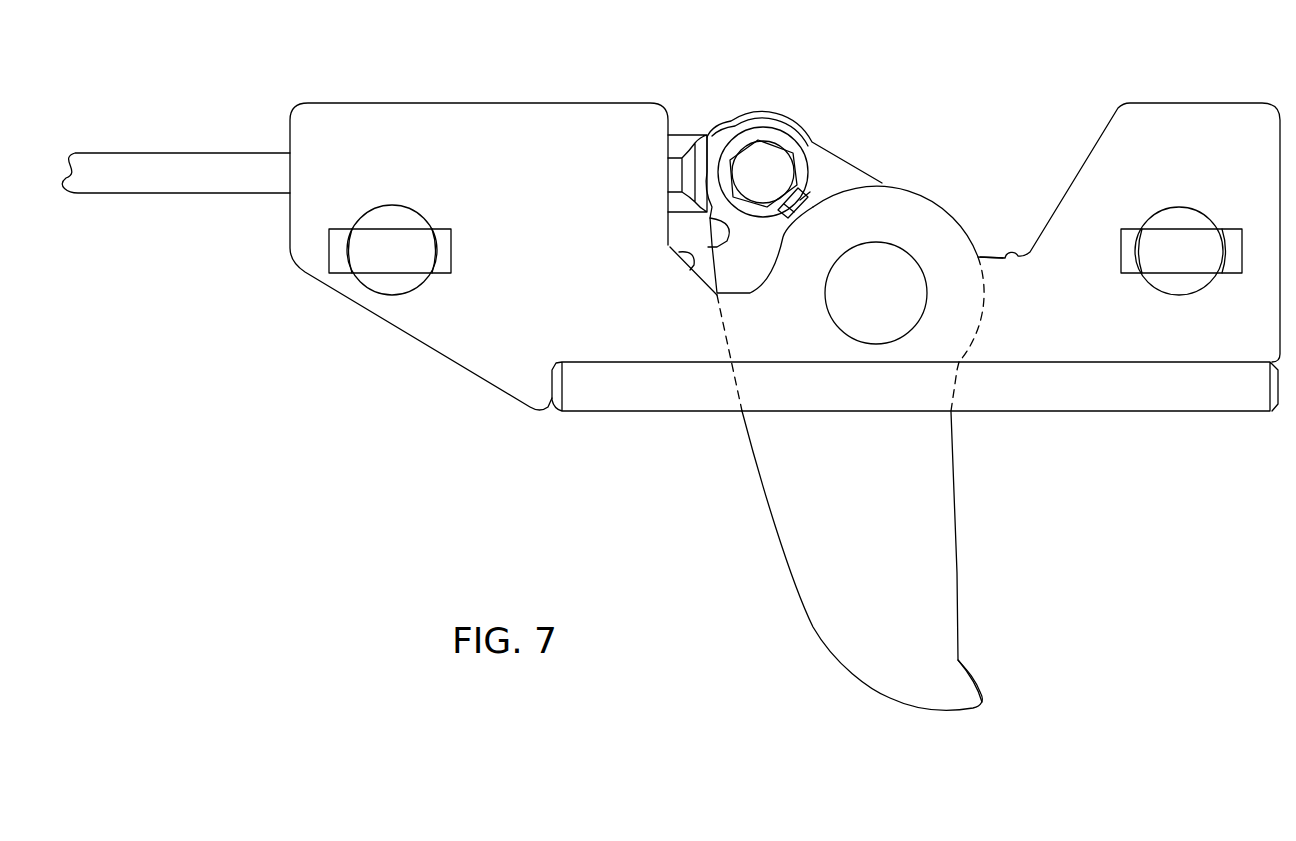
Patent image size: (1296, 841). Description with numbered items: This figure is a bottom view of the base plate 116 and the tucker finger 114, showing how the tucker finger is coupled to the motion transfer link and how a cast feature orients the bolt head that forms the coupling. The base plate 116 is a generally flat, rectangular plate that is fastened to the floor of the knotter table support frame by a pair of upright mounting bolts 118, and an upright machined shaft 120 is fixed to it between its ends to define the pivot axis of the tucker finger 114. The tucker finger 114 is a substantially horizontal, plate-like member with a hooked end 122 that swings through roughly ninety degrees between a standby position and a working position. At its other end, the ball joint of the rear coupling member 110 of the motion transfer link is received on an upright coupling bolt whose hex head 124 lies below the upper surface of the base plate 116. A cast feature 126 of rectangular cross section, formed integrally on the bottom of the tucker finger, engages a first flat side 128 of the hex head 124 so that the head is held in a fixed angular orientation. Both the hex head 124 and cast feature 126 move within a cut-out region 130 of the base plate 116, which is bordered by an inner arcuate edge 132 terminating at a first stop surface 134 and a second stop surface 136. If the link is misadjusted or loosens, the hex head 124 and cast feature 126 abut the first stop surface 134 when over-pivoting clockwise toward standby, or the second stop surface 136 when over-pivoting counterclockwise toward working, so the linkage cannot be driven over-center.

The rear coupling member 110 is at (680, 135).
The tucker finger 114 is at (797, 632).
The base plate 116 is at (561, 78).
The mounting bolts 118 is at (393, 205).
The machined shaft 120 is at (904, 246).
The hooked end 122 is at (984, 704).
The hex head 124 is at (791, 188).
The cast feature 126 is at (810, 196).
The first flat side 128 is at (789, 220).
The cut-out region 130 is at (991, 63).
The inner arcuate edge 132 is at (908, 187).
The first stop surface 134 is at (1003, 258).
The second stop surface 136 is at (678, 254).